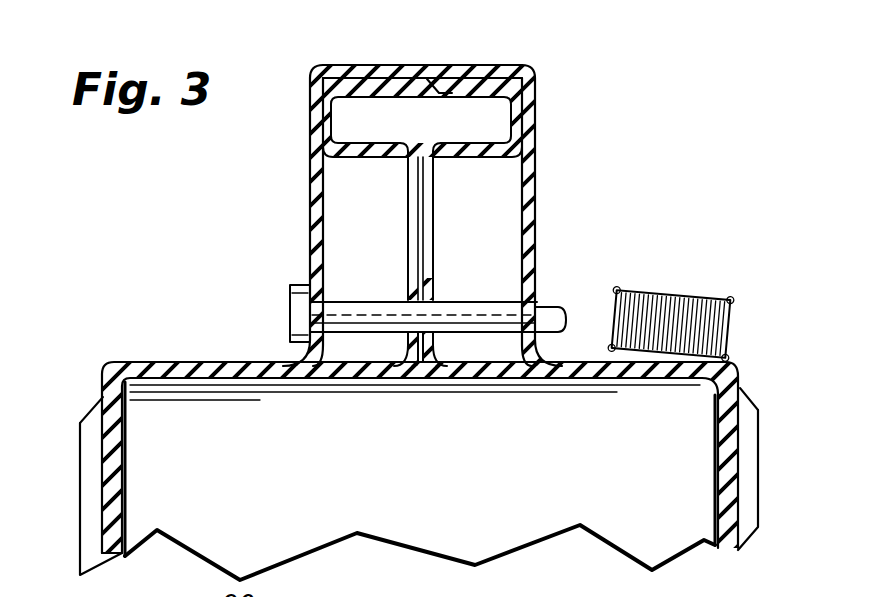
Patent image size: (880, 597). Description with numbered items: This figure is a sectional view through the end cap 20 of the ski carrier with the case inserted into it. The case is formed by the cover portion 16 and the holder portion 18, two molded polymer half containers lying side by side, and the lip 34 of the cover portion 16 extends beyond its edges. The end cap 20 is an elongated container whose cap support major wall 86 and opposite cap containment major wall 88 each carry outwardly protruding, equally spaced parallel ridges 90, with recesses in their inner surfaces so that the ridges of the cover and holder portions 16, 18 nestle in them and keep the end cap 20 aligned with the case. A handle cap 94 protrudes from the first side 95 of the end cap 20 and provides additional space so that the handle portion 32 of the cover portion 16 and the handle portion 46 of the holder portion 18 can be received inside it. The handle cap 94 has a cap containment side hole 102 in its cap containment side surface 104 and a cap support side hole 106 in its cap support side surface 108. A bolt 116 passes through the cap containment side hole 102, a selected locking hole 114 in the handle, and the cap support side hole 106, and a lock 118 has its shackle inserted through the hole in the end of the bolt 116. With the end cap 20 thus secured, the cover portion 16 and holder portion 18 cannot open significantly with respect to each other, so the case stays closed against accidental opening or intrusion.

The cover portion 16 is at (720, 452).
The holder portion 18 is at (110, 495).
The end cap 20 is at (440, 298).
The handle portion 32 is at (468, 78).
The lip 34 is at (416, 80).
The handle portion 46 is at (352, 90).
The cap support major wall 86 is at (100, 442).
The cap containment major wall 88 is at (743, 420).
The ridges 90 is at (92, 540).
The handle cap 94 is at (440, 298).
The first side 95 is at (203, 360).
The cap containment side hole 102 is at (451, 290).
The cap containment side surface 104 is at (534, 243).
The cap support side hole 106 is at (320, 298).
The cap support side surface 108 is at (312, 205).
The locking hole 114 is at (437, 292).
The bolt 116 is at (455, 313).
The lock 118 is at (668, 317).